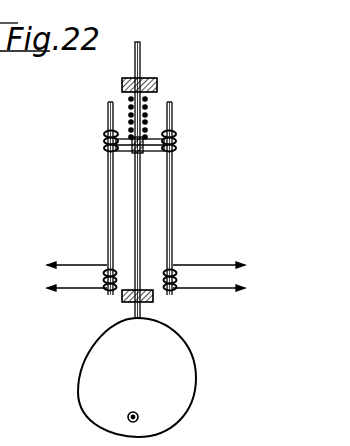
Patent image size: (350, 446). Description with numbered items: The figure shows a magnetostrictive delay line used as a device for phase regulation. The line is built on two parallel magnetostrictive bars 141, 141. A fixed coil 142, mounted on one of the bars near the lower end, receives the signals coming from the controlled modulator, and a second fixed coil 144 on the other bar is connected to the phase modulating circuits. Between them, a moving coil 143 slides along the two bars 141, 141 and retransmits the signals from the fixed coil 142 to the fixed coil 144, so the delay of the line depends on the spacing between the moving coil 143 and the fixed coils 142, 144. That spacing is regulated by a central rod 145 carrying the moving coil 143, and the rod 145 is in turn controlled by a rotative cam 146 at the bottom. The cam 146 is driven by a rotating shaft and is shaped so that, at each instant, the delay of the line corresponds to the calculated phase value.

The magnetostrictive bar 141 is at (108, 198).
The fixed coil 142 is at (103, 280).
The moving coil 143 is at (113, 153).
The fixed coil 144 is at (177, 278).
The rod 145 is at (139, 219).
The rotative cam 146 is at (165, 353).